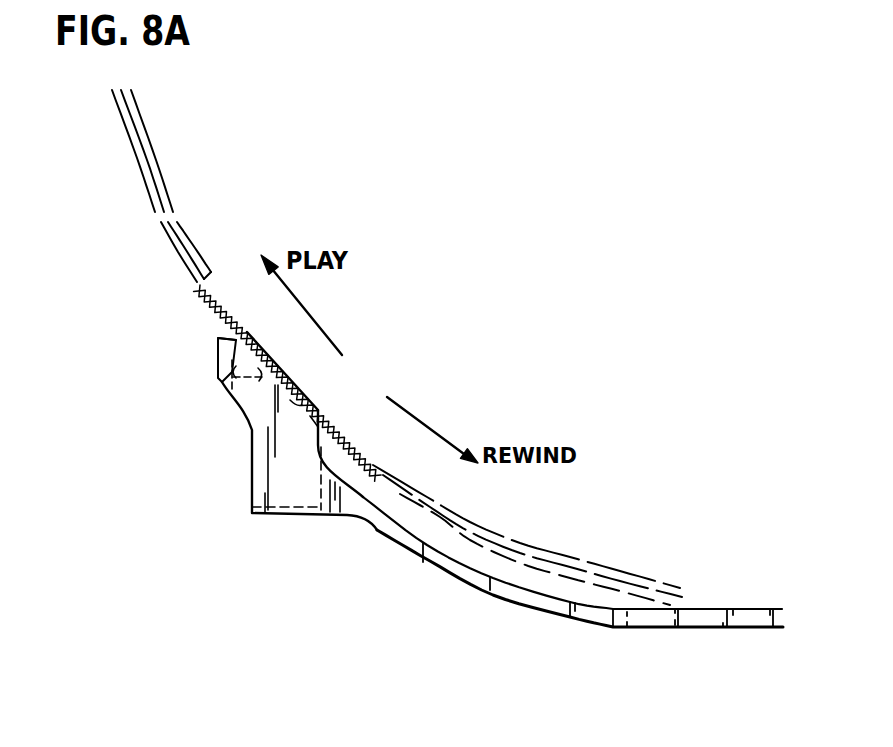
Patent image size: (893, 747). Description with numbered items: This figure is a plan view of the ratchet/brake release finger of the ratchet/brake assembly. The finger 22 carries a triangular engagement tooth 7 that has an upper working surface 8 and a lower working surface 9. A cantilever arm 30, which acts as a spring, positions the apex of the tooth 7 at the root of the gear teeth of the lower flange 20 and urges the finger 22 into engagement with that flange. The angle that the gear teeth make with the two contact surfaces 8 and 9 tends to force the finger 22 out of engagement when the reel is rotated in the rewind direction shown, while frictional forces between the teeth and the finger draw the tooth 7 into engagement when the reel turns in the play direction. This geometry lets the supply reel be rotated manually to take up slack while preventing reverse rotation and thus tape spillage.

The triangular engagement tooth 7 is at (218, 362).
The upper working surface 8 is at (222, 336).
The lower working surface 9 is at (232, 392).
The lower flange 20 is at (424, 494).
The finger 22 is at (252, 475).
The cantilever arm 30 is at (438, 563).